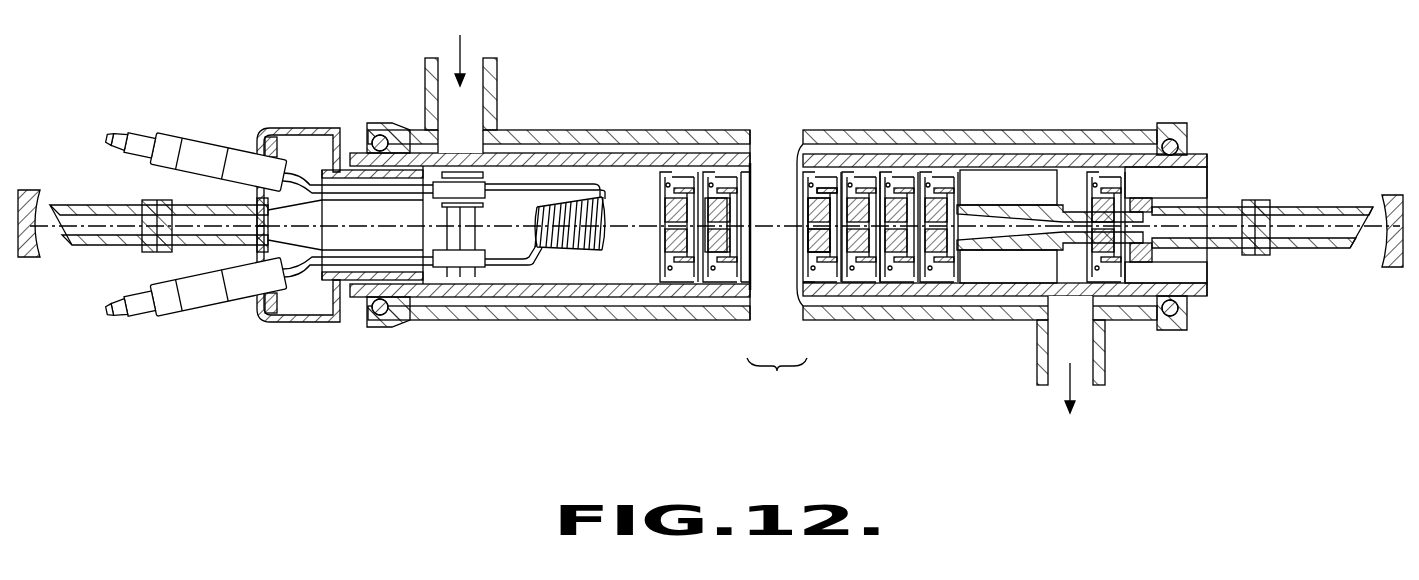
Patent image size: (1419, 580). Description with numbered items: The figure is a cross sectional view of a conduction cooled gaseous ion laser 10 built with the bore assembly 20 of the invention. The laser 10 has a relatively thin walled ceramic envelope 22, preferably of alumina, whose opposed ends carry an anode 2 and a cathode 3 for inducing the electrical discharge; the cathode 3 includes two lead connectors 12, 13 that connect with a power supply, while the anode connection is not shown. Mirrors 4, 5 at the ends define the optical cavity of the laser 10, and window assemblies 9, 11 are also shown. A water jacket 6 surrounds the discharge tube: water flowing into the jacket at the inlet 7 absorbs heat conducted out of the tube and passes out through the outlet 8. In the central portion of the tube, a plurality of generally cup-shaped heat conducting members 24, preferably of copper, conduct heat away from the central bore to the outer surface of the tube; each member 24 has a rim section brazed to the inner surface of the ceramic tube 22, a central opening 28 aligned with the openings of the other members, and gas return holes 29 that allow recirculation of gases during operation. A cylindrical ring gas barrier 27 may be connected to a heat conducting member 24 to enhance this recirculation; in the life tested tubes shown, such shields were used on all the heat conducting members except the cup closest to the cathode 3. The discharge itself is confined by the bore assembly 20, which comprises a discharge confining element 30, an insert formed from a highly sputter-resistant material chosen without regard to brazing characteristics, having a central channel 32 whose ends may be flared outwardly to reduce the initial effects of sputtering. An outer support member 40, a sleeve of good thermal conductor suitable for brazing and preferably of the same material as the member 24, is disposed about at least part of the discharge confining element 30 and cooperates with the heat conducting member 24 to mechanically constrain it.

The anode 2 is at (973, 257).
The cathode 3 is at (583, 250).
The mirror 4 is at (28, 190).
The mirror 5 is at (1397, 197).
The water jacket 6 is at (525, 128).
The inlet 7 is at (478, 64).
The outlet 8 is at (1087, 357).
The window assembly 9 is at (92, 250).
The gaseous ion laser 10 is at (652, 114).
The window assembly 11 is at (1295, 248).
The lead connector 12 is at (174, 132).
The lead connector 13 is at (174, 316).
The bore assembly 20 is at (806, 276).
The ceramic envelope 22 is at (910, 158).
The heat conducting member 24 is at (913, 273).
The cylindrical ring gas barrier 27 is at (755, 180).
The central opening 28 is at (660, 245).
The gas return hole 29 is at (820, 170).
The discharge confining element 30 is at (806, 241).
The central channel 32 is at (722, 227).
The outer support member 40 is at (806, 202).